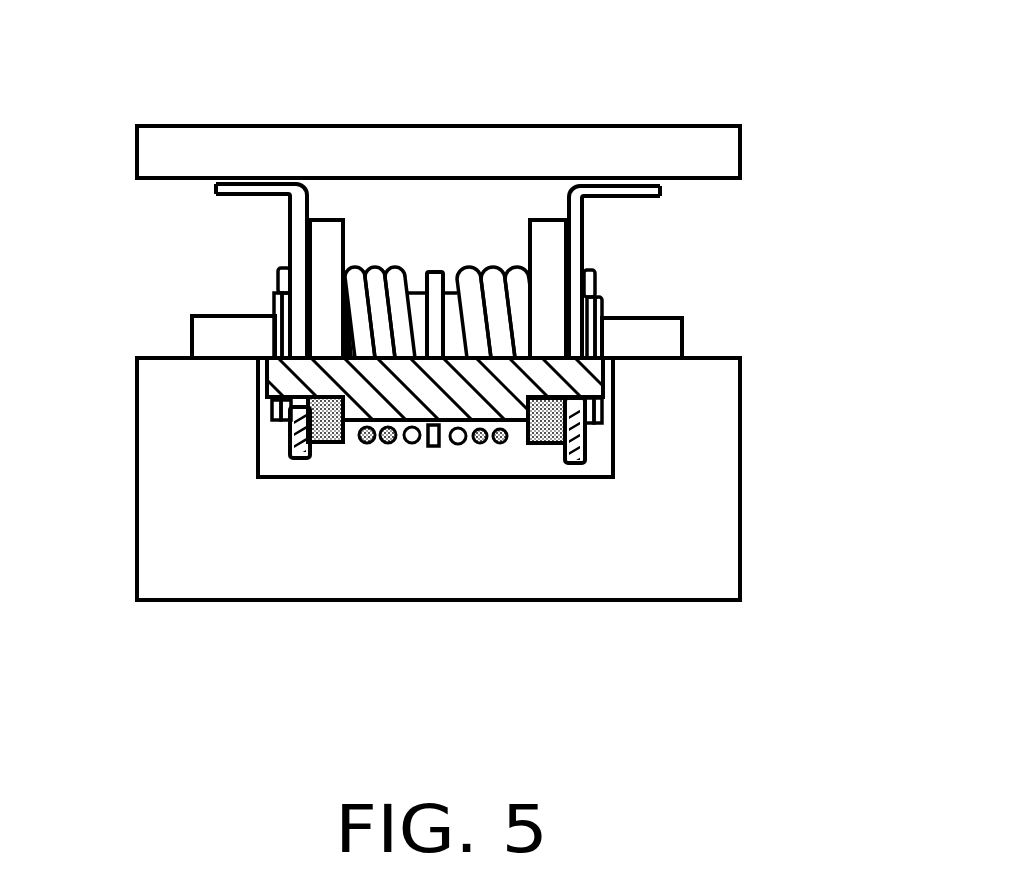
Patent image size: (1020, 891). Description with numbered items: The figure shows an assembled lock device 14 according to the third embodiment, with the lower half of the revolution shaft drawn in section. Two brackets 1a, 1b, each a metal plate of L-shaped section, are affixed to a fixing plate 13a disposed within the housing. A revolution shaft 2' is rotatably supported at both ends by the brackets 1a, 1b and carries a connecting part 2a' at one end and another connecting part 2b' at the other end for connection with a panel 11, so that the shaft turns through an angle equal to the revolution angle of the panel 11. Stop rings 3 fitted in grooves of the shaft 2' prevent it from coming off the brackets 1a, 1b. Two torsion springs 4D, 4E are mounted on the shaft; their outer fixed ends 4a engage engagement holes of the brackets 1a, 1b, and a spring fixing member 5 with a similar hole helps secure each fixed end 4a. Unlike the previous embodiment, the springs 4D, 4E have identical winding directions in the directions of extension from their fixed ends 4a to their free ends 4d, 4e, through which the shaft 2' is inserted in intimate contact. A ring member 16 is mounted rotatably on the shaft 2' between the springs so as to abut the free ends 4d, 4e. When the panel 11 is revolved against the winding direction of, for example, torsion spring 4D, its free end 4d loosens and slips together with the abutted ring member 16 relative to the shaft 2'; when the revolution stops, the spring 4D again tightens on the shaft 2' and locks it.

The actuator assembly 14 is at (772, 140).
The fixing plate 13a is at (259, 124).
The bracket 1a is at (660, 192).
The bracket 1b is at (215, 187).
The torsion spring 4E is at (388, 243).
The torsion spring 4D is at (493, 237).
The ring member 16 is at (437, 270).
The fixed end 4a is at (278, 278).
The revolution shaft 2' is at (451, 308).
The connecting part 2a' is at (714, 328).
The connecting part 2b' is at (175, 319).
The panel 11 is at (741, 466).
The spring fixing member 5 is at (323, 442).
The stop ring 3 is at (283, 420).
The free end 4e is at (412, 442).
The free end 4d is at (458, 445).